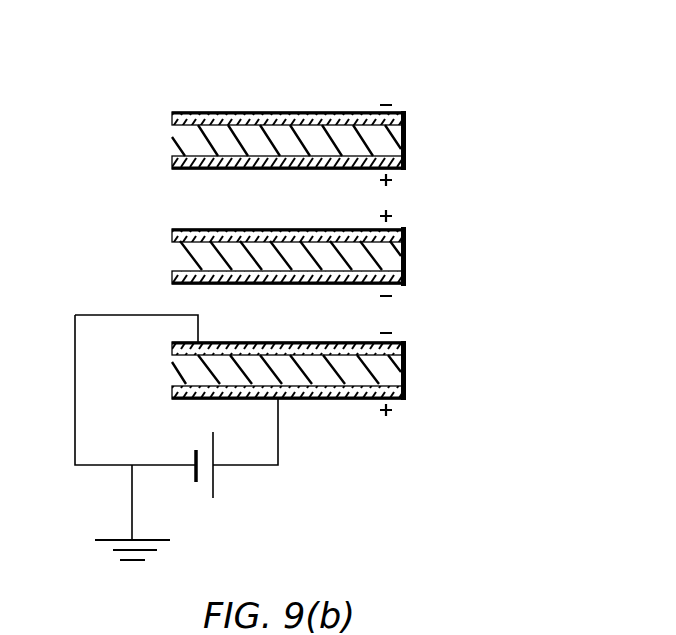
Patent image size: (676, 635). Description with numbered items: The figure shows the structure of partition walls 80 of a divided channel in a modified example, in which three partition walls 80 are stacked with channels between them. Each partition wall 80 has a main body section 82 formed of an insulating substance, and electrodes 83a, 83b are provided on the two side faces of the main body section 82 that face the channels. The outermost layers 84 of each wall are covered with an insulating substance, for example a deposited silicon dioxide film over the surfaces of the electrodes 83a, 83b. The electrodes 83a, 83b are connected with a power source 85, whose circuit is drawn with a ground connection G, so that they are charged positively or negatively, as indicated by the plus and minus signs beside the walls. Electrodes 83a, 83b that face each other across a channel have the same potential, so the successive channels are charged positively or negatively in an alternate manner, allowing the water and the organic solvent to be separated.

The partition wall 80 is at (337, 241).
The main body section 82 is at (393, 143).
The electrode 83a is at (228, 168).
The electrode 83b is at (236, 112).
The outermost layer 84 is at (318, 112).
The power source 85 is at (218, 487).
The ground G is at (138, 560).